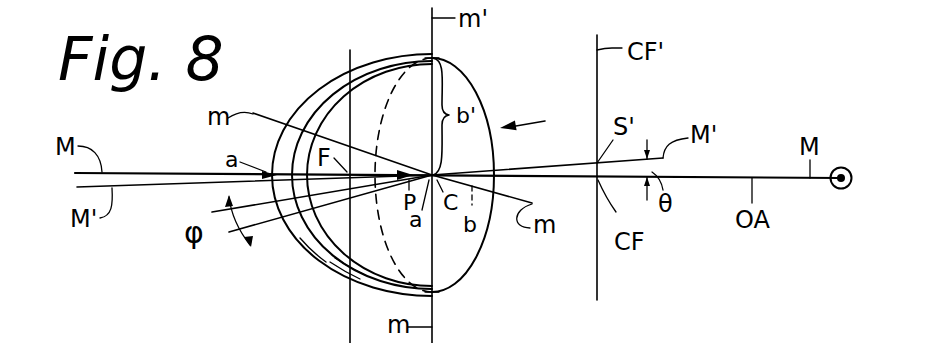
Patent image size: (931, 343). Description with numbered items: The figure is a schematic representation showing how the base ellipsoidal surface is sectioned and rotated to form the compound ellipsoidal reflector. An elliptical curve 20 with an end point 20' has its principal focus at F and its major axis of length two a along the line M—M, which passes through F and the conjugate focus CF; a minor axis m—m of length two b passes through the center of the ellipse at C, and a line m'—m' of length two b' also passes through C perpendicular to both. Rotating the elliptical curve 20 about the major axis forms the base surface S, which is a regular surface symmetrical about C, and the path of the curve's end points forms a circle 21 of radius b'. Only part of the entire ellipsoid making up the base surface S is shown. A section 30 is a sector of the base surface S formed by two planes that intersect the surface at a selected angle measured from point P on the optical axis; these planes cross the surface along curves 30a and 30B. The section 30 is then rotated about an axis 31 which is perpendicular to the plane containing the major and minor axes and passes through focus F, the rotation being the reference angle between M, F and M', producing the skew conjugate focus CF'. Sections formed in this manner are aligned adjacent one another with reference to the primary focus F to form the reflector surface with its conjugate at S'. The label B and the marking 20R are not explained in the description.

The elliptical curve 20 is at (323, 175).
The end point of elliptical curve 20' is at (247, 152).
The rear portion of lens surface 20R is at (305, 243).
The circle 21 is at (485, 97).
The section 30 is at (314, 115).
The curve 30a is at (338, 268).
The curve 30B is at (345, 258).
The axis 31 is at (349, 331).
The outer boundary surface B is at (333, 78).
The base surface S is at (568, 133).